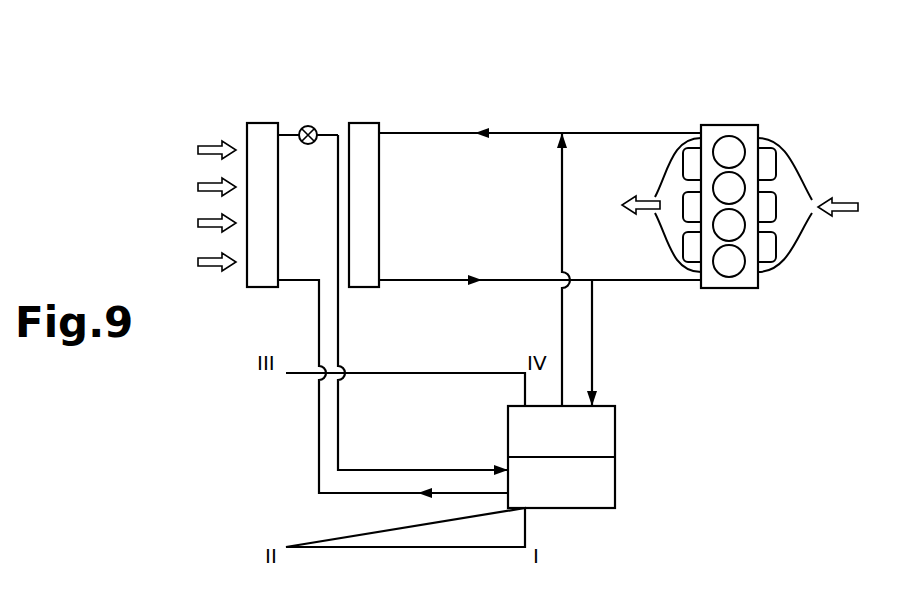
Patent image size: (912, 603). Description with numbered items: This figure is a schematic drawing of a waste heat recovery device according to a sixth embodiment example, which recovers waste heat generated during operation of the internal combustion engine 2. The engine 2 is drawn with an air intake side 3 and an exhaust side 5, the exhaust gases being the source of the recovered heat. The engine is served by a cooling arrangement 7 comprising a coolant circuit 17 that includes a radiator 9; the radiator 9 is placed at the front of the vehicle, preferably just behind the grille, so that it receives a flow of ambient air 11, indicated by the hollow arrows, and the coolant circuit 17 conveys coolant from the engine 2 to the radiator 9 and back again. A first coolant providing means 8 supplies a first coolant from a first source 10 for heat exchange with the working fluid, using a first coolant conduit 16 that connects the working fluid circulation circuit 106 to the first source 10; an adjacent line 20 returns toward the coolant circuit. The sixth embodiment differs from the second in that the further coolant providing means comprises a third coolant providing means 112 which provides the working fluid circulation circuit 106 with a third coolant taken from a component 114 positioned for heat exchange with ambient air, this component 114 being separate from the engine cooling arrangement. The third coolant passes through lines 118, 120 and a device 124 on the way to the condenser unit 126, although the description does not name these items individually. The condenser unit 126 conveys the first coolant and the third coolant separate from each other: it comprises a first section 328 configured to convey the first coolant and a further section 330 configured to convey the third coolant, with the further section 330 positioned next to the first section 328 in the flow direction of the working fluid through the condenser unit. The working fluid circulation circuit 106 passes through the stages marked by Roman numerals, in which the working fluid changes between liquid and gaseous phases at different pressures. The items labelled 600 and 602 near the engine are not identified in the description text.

The internal combustion engine 2 is at (717, 125).
The air intake side 3 is at (780, 164).
The exhaust side 5 is at (678, 163).
The cooling arrangement 7 is at (420, 108).
The first coolant providing means 8 is at (607, 338).
The radiator 9 is at (360, 127).
The first source 10 is at (605, 292).
The flow of ambient air 11 is at (197, 186).
The first coolant conduit 16 is at (594, 358).
The coolant circuit 17 is at (445, 132).
The coolant line 20 is at (566, 168).
The working fluid circulation circuit 106 is at (562, 520).
The third coolant providing means 112 is at (349, 336).
The component positioned for heat exchange with ambient air 114 is at (254, 127).
The line 118 is at (339, 306).
The line 120 is at (309, 329).
The valve 124 is at (305, 127).
The condenser unit 126 is at (638, 429).
The first section 328 is at (611, 440).
The further section 330 is at (607, 492).
The drive unit 600 is at (764, 87).
The intake air 602 is at (826, 127).